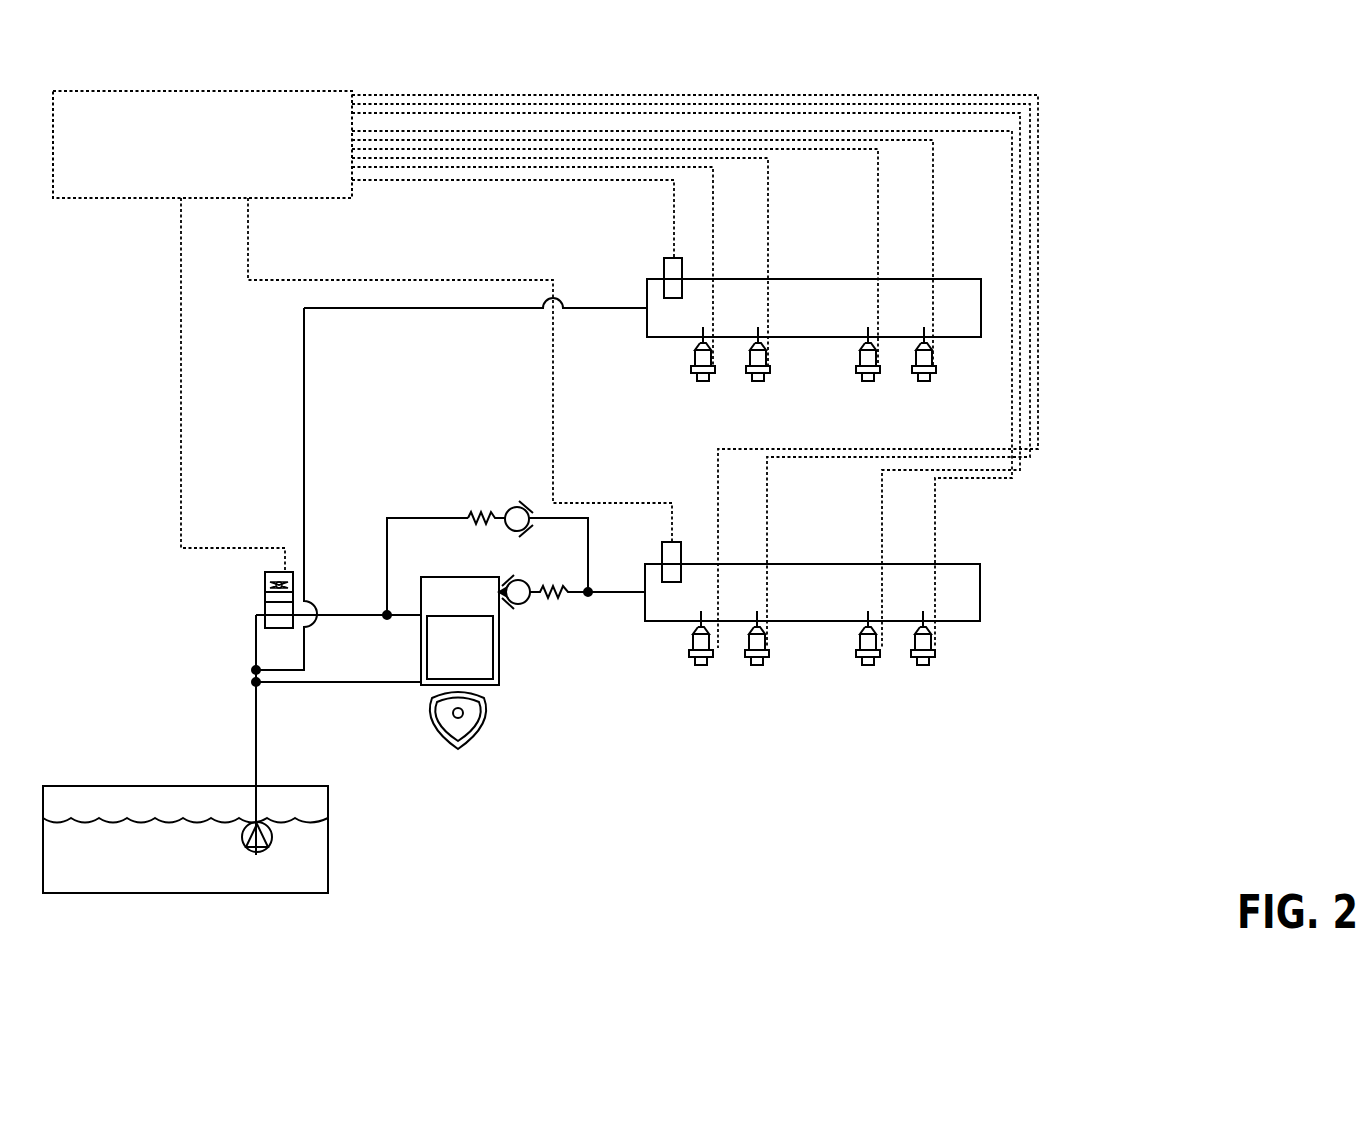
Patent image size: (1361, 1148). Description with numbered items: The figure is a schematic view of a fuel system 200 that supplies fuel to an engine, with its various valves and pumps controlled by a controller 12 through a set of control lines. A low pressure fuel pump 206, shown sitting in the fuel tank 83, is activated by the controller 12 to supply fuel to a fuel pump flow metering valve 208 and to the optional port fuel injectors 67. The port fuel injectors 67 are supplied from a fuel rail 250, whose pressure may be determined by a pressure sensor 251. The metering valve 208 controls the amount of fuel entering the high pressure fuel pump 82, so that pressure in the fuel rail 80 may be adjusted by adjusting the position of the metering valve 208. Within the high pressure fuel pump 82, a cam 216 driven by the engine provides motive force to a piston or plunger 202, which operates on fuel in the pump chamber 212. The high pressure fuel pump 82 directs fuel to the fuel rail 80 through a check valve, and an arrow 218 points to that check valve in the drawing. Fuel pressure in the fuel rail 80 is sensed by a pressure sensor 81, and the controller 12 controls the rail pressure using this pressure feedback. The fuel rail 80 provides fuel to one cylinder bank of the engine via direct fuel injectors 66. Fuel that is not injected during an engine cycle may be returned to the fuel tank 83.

The controller 12 is at (216, 164).
The fuel system 200 is at (1226, 97).
The fuel rail 250 is at (807, 279).
The pressure sensor 251 is at (664, 268).
The port fuel injectors 67 is at (691, 372).
The fuel rail 80 is at (835, 564).
The pressure sensor 81 is at (679, 542).
The direct fuel injectors 66 is at (689, 657).
The high pressure fuel pump 82 is at (452, 558).
The pump chamber 212 is at (481, 610).
The piston or plunger 202 is at (481, 662).
The check valve 218 is at (534, 617).
The cam 216 is at (428, 718).
The fuel pump flow metering valve 208 is at (265, 581).
The fuel tank 83 is at (328, 880).
The low pressure fuel pump 206 is at (243, 846).